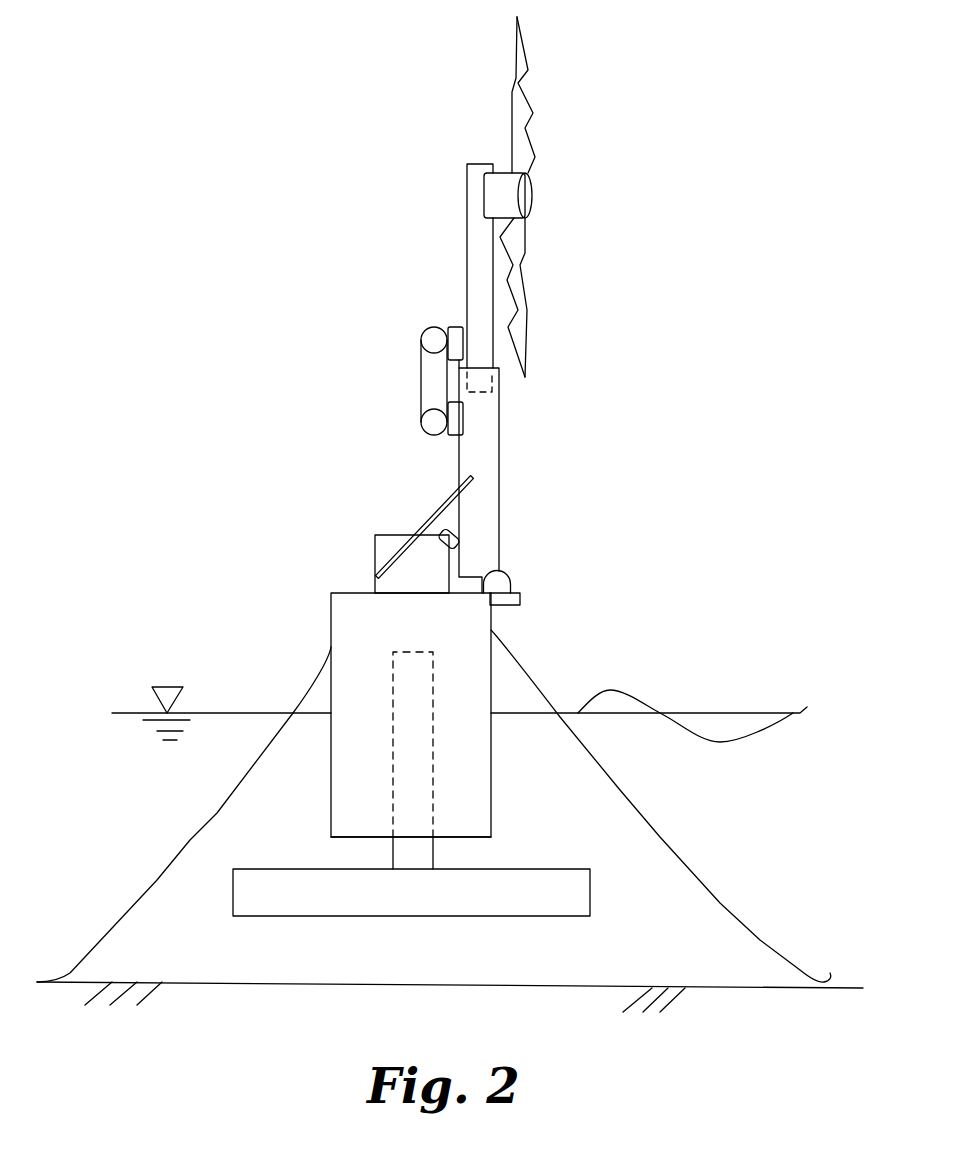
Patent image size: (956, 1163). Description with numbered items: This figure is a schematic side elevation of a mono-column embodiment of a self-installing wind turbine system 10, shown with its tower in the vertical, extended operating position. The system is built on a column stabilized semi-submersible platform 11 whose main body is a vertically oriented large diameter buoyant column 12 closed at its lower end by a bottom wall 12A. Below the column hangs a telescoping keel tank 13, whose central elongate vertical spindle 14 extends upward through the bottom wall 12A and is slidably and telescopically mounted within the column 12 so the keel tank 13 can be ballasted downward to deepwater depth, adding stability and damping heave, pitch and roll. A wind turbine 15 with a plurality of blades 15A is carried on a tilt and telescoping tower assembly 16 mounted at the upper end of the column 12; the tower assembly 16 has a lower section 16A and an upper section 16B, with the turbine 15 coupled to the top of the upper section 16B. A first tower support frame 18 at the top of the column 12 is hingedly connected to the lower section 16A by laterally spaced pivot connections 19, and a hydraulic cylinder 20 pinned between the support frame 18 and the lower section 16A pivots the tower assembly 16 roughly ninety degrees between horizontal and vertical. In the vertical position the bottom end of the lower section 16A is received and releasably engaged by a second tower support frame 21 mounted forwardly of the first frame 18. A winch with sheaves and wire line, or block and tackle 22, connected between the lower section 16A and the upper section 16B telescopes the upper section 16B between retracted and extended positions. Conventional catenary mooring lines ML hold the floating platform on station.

The self-installing wind turbine system 10 is at (225, 472).
The column stabilized semi-submersible platform 11 is at (298, 642).
The large diameter buoyant column 12 is at (495, 777).
The bottom wall 12A is at (340, 838).
The telescoping keel tank 13 is at (517, 905).
The central elongate vertical spindle 14 is at (433, 855).
The wind turbine 15 is at (541, 197).
The blades 15A is at (530, 133).
The tilt and telescoping tower assembly 16 is at (543, 447).
The lower section 16A is at (499, 500).
The upper section 16B is at (467, 242).
The first tower support frame 18 is at (375, 545).
The pivot connections 19 is at (457, 537).
The hydraulic cylinder 20 is at (443, 508).
The second tower support frame 21 is at (520, 597).
The block and tackle 22 is at (420, 377).
The catenary mooring lines ML is at (215, 817).